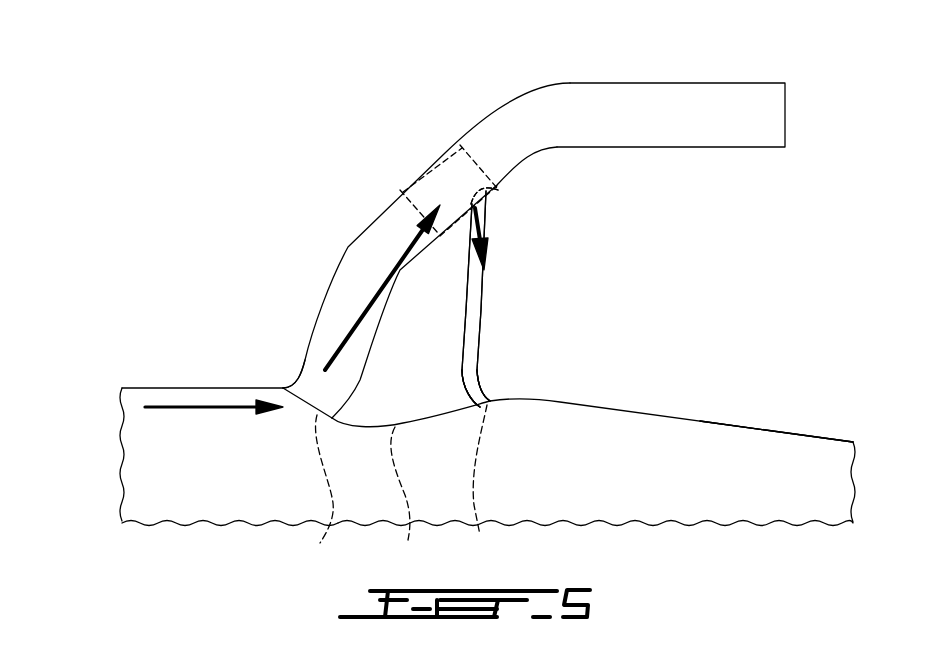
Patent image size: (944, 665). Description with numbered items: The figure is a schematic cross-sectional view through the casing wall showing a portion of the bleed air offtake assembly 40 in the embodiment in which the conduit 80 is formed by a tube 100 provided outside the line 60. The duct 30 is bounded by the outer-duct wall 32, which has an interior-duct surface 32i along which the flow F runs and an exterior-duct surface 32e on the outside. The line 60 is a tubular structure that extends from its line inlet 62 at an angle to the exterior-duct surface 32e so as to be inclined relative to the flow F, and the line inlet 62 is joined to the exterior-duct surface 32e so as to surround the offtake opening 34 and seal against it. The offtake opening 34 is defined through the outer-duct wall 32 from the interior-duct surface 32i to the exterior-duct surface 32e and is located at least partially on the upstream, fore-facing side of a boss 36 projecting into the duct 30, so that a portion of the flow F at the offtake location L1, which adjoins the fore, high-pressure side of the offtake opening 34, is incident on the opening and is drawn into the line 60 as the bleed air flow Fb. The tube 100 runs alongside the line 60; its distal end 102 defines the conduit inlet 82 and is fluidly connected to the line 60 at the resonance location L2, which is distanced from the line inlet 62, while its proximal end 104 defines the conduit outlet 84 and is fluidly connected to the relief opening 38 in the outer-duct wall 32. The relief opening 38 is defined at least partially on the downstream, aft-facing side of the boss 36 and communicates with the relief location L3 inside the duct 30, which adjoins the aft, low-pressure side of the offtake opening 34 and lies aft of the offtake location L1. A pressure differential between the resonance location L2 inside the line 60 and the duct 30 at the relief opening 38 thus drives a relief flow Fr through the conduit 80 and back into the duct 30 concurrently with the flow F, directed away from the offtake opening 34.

The duct 30 is at (90, 462).
The outer-duct wall 32 is at (658, 413).
The exterior-duct surface 32e is at (789, 412).
The interior-duct surface 32i is at (766, 449).
The offtake opening 34 is at (322, 495).
The boss 36 is at (406, 501).
The relief opening 38 is at (481, 490).
The offtake assembly 40 is at (209, 161).
The line 60 is at (640, 115).
The line inlet 62 is at (297, 380).
The conduit 80 is at (476, 288).
The conduit inlet 82 is at (498, 190).
The conduit outlet 84 is at (490, 400).
The tube 100 is at (476, 288).
The distal end 102 is at (498, 190).
The proximal end 104 is at (490, 400).
The flow F is at (193, 422).
The bleed air flow Fb is at (380, 291).
The relief flow Fr is at (485, 228).
The offtake location L1 is at (292, 453).
The resonance location L2 is at (423, 167).
The relief location L3 is at (528, 445).